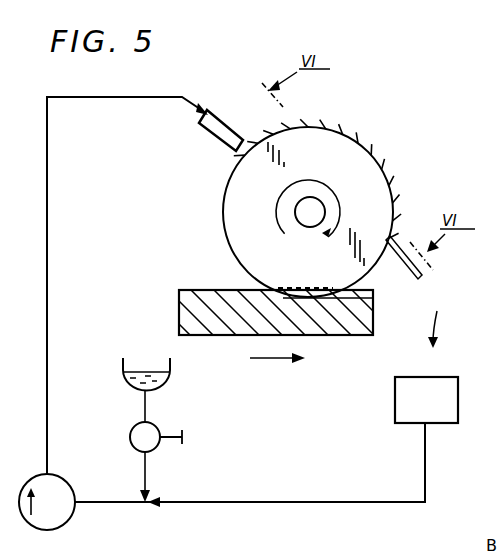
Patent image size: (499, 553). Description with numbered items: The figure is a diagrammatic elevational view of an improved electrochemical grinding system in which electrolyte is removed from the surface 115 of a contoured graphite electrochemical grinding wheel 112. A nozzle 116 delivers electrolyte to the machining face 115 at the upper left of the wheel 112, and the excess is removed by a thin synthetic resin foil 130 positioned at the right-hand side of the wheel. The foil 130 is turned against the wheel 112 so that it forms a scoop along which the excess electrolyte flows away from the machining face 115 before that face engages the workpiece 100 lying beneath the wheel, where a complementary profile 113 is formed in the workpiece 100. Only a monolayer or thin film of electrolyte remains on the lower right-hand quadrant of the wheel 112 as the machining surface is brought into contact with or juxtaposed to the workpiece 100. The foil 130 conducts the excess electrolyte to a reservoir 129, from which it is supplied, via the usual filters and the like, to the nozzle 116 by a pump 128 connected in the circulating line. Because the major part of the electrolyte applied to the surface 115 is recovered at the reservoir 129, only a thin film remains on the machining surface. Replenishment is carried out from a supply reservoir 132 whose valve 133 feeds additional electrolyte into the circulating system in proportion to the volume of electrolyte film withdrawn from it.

The workpiece 100 is at (217, 327).
The contoured graphite electrochemical grinding wheel 112 is at (248, 245).
The complementary profile 113 is at (375, 295).
The surface (machining face) of the grinding wheel 115 is at (225, 205).
The nozzle 116 is at (212, 128).
The pump 128 is at (67, 523).
The reservoir 129 is at (393, 410).
The thin synthetic resin foil 130 is at (418, 278).
The supply reservoir 132 is at (127, 386).
The valve 133 is at (157, 452).